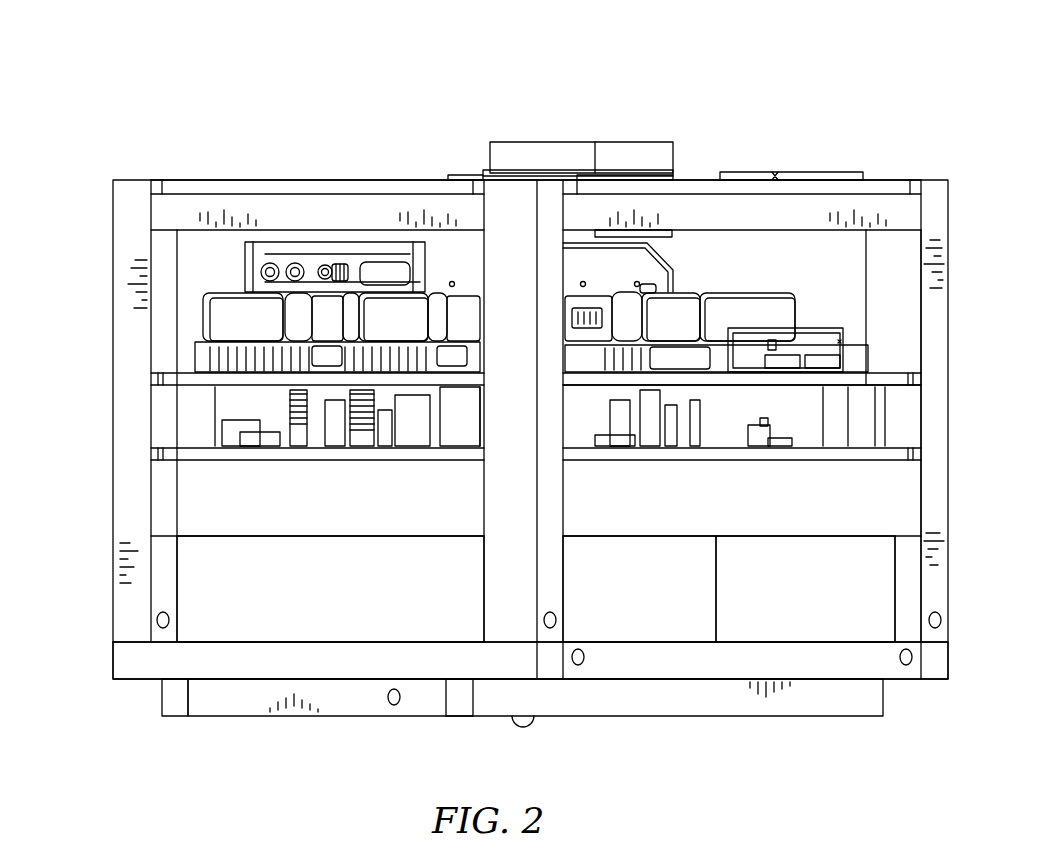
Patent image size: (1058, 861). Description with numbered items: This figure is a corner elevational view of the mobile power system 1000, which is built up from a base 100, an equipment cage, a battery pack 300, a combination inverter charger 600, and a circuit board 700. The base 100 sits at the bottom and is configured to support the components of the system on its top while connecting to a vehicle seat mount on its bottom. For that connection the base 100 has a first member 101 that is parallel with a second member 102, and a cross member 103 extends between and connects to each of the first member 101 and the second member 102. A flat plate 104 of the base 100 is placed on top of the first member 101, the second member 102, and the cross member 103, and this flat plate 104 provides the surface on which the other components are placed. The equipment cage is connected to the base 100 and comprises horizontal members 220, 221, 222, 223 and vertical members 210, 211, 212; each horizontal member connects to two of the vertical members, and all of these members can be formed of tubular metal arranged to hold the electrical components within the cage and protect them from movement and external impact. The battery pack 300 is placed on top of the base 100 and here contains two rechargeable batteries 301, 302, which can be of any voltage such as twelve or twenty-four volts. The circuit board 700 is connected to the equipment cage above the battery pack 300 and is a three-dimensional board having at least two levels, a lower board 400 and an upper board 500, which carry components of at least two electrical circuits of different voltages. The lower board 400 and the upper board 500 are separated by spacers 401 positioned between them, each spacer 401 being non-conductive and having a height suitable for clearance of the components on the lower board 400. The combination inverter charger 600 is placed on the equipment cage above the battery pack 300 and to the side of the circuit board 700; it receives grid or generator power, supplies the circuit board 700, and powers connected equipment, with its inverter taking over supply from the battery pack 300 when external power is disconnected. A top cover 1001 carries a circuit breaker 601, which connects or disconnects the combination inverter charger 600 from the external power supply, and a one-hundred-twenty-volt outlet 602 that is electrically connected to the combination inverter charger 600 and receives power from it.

The mobile power system 1000 is at (168, 65).
The top cover 1001 is at (383, 184).
The base 100 is at (110, 662).
The first member 101 is at (193, 698).
The second member 102 is at (457, 708).
The cross member 103 is at (417, 706).
The flat plate 104 is at (695, 665).
The vertical member 210 is at (113, 420).
The vertical member 211 is at (523, 429).
The vertical member 212 is at (947, 342).
The horizontal member 220 is at (347, 444).
The horizontal member 221 is at (337, 287).
The horizontal member 222 is at (740, 444).
The horizontal member 223 is at (716, 287).
The battery pack 300 is at (330, 589).
The battery 301 is at (639, 589).
The battery 302 is at (805, 589).
The lower board 400 is at (790, 462).
The spacer 401 is at (742, 410).
The upper board 500 is at (860, 370).
The combination inverter charger 600 is at (660, 265).
The circuit breaker 601 is at (572, 152).
The 120V outlet 602 is at (470, 179).
The circuit board 700 is at (148, 416).